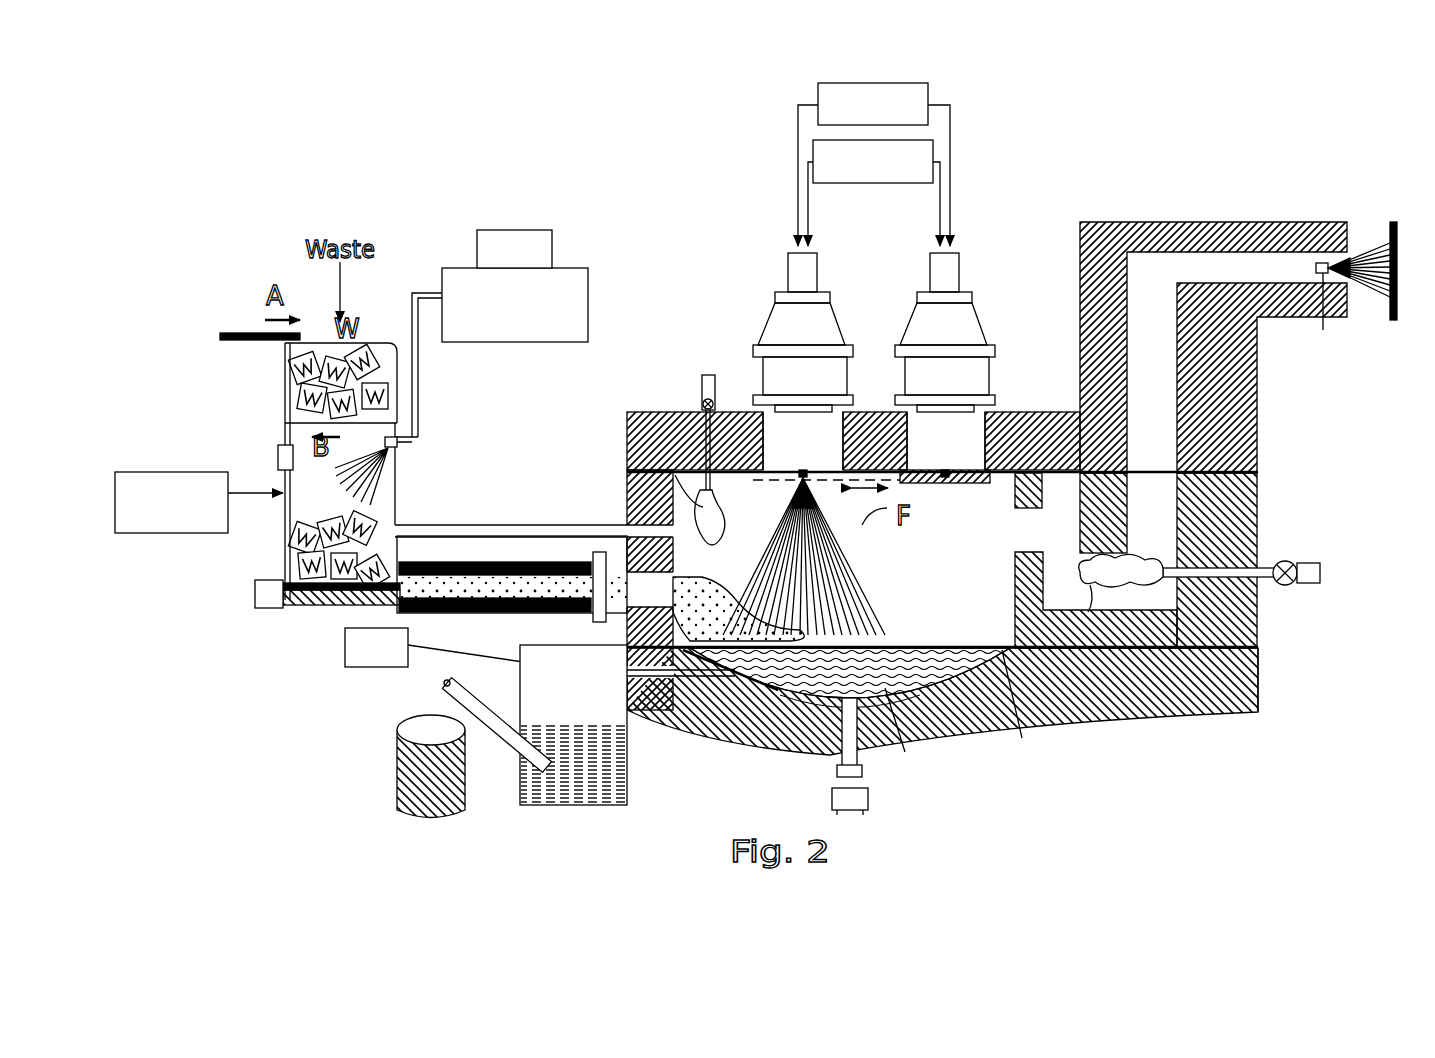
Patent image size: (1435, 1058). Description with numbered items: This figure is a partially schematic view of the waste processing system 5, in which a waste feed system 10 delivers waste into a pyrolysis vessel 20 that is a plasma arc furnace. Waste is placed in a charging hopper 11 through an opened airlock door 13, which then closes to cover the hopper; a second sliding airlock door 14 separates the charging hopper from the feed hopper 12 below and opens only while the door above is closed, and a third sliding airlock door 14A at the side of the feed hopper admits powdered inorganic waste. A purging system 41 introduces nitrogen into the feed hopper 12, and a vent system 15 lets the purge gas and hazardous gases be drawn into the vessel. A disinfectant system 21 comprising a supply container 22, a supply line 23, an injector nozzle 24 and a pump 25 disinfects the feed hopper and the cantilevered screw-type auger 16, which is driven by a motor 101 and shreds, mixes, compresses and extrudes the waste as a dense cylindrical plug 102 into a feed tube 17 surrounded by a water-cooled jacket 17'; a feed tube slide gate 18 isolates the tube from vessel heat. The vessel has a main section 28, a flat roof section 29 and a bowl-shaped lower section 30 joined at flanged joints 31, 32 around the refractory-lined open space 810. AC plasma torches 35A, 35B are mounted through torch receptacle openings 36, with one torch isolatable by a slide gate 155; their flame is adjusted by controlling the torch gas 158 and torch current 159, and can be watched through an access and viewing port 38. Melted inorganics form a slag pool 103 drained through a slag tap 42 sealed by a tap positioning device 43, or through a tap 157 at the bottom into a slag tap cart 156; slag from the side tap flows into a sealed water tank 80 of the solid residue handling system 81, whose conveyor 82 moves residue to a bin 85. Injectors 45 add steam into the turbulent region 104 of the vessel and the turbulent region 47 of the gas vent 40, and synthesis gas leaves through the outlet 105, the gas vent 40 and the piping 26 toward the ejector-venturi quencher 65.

The waste processing system 5 is at (655, 183).
The waste feed system 10 is at (238, 458).
The charging hopper 11 is at (285, 378).
The feed hopper 12 is at (283, 510).
The airlock door 13 is at (252, 333).
The sliding airlock door 14 is at (290, 410).
The third sliding airlock door 14A is at (279, 455).
The vent system 15 is at (455, 536).
The cantilevered screw-type auger 16 is at (305, 605).
The feed tube 17 is at (441, 665).
The water-cooled jacket 17' is at (495, 544).
The feed tube slide gate 18 is at (593, 555).
The pyrolysis vessel 20 is at (777, 758).
The disinfectant system 21 is at (512, 226).
The supply container 22 is at (590, 303).
The supply line 23 is at (418, 416).
The injector nozzle 24 is at (396, 448).
The pump 25 is at (533, 228).
The piping 26 is at (1232, 220).
The main section 28 is at (1258, 528).
The flat roof section 29 is at (627, 432).
The lower section 30 is at (1258, 700).
The flanged joint 31 is at (1258, 473).
The flanged joint 32 is at (1258, 640).
The AC plasma torch 35A is at (790, 285).
The AC plasma torch 35B is at (947, 272).
The torch receptacle opening 36 is at (738, 412).
The access and viewing port 38 is at (627, 487).
The gas vent 40 is at (1157, 435).
The purging system 41 is at (116, 520).
The slag tap 42 is at (630, 713).
The tap positioning device 43 is at (392, 652).
The injector 45 is at (1303, 565).
The turbulent region 47 is at (1125, 690).
The ejector-venturi quencher 65 is at (1398, 268).
The sealed water tank 80 is at (516, 693).
The solid residue handling system 81 is at (494, 794).
The conveyor 82 is at (440, 683).
The bin 85 is at (402, 807).
The motor 101 is at (255, 594).
The cylindrical plug 102 is at (532, 590).
The slag pool 103 is at (933, 750).
The turbulent region 104 is at (670, 412).
The outlet 105 is at (1023, 532).
The slide gate 155 is at (930, 487).
The slag tap cart 156 is at (868, 800).
The tap 157 is at (862, 771).
The torch gas 158 is at (813, 150).
The torch current 159 is at (818, 93).
The open space 810 is at (948, 572).